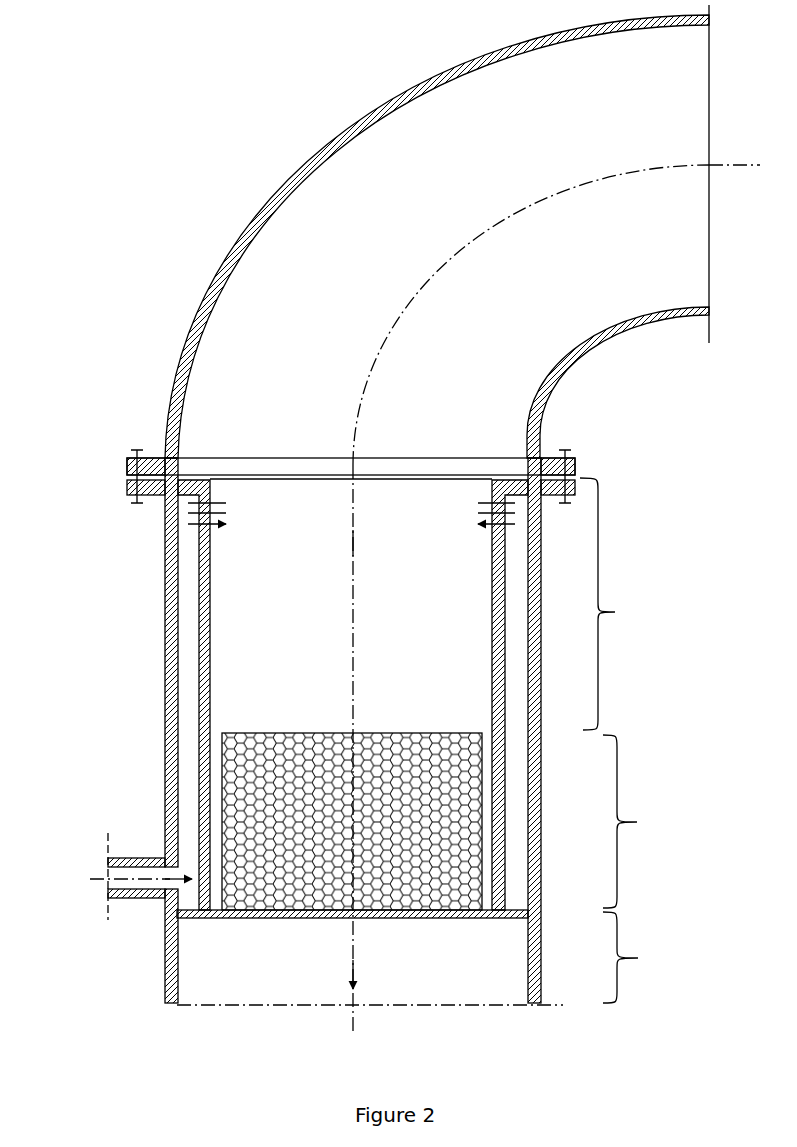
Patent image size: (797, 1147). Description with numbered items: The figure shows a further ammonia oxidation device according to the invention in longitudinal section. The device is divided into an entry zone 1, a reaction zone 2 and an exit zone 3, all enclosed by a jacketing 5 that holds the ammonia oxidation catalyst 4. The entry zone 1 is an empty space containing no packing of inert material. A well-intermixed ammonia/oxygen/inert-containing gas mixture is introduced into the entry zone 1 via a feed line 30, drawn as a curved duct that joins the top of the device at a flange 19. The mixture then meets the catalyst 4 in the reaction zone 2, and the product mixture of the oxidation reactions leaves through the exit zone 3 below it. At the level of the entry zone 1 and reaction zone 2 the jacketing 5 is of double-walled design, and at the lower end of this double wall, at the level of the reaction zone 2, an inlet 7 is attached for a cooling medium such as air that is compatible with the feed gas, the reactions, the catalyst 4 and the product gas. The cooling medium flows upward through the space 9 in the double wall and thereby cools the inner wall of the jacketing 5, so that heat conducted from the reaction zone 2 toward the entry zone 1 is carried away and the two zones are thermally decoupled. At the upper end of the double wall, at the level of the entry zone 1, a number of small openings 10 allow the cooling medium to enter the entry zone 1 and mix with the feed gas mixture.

The entry zone 1 is at (618, 604).
The reaction zone 2 is at (641, 821).
The exit zone 3 is at (641, 957).
The ammonia oxidation catalyst 4 is at (370, 908).
The jacketing 5 is at (211, 595).
The inlet 7 is at (108, 876).
The space 9 is at (190, 685).
The small openings 10 is at (310, 750).
The flange 19 is at (573, 457).
The feed line 30 is at (602, 178).